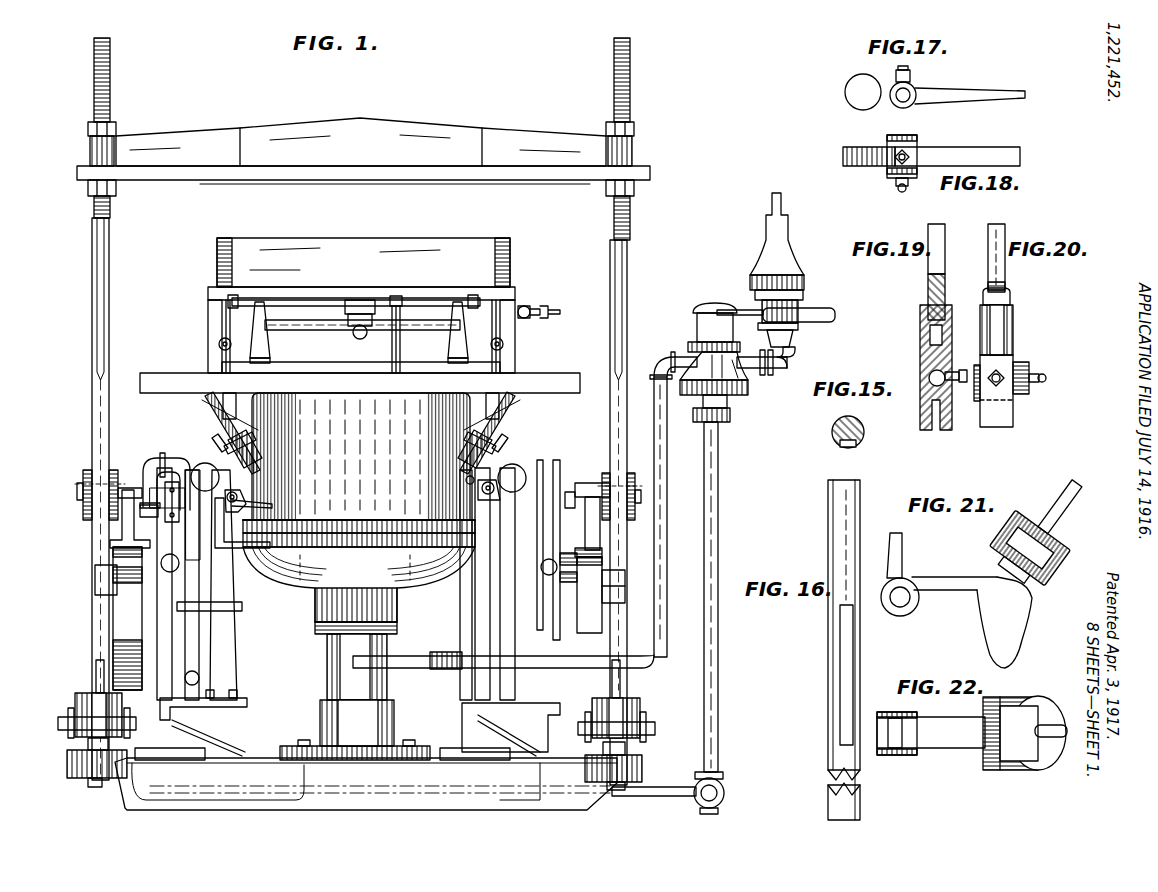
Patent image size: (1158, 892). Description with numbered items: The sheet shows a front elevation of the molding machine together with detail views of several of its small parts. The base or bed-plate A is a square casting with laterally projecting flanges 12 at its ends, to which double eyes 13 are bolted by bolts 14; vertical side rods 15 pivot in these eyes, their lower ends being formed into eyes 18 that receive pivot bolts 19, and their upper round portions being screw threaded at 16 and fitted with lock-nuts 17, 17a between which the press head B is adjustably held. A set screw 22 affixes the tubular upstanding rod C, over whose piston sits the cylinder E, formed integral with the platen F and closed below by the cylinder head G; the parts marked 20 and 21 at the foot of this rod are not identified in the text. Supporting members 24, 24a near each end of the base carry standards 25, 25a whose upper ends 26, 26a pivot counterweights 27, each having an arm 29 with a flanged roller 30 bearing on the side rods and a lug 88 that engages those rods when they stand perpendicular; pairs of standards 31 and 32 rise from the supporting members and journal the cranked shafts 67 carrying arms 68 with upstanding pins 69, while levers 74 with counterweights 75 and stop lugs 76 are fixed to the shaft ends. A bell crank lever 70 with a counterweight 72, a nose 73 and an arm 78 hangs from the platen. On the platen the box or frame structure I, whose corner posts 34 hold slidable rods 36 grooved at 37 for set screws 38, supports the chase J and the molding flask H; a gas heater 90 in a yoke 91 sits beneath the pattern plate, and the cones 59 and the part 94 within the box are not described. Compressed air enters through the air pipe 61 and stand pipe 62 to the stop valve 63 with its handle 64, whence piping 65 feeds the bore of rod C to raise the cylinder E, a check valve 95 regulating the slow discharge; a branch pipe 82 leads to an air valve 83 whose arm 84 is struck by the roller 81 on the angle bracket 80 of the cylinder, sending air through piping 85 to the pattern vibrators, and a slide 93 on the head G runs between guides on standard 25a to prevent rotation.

In FIG. 1, the laterally projecting flanges 12 is at (65, 766).
In FIG. 1, the double eyes 13 is at (72, 700).
In FIG. 1, the bolts 14 is at (86, 786).
In FIG. 1, the vertically extending rods 15 is at (91, 414).
In FIG. 1, the screw threaded portion 16 is at (92, 96).
In FIG. 1, the lock-nut 17 is at (86, 128).
In FIG. 1, the lock-nut 17a is at (86, 190).
In FIG. 1, the eyes 18 is at (96, 690).
In FIG. 1, the pivot bolts 19 is at (56, 722).
In FIG. 1, the base hub 20 is at (316, 715).
In FIG. 1, the base plate 21 is at (294, 748).
In FIG. 1, the set screw 22 is at (364, 728).
In FIG. 1, the supporting member 24 is at (200, 720).
In FIG. 1, the supporting member 24a is at (520, 726).
In FIG. 1, the standard 25 is at (155, 620).
In FIG. 1, the standard 25a is at (517, 580).
In FIG. 1, the upper end of standard 26 is at (120, 536).
In FIG. 1, the upper end of standard 26a is at (572, 546).
In FIG. 1, the counterweights 27 is at (357, 618).
In FIG. 1, the upwardly extending arm 29 is at (602, 524).
In FIG. 1, the flanged rollers 30 is at (82, 468).
In FIG. 1, the standards 31 is at (238, 636).
In FIG. 1, the standards 32 is at (470, 636).
In FIG. 1, the post 34 is at (207, 324).
In FIG. 1, the slidable rods 36 is at (220, 405).
In FIG. 15, the slidable rods 36 is at (832, 436).
In FIG. 16, the slidable rods 36 is at (828, 540).
In FIG. 15, the grooves 37 is at (843, 448).
In FIG. 16, the grooves 37 is at (846, 640).
In FIG. 1, the set screws 38 is at (218, 345).
In FIG. 1, the cone 59 is at (359, 332).
In FIG. 1, the air pipe 61 is at (726, 808).
In FIG. 1, the stand pipe 62 is at (722, 636).
In FIG. 1, the stop valve 63 is at (750, 388).
In FIG. 1, the operating handle 64 is at (838, 315).
In FIG. 1, the piping 65 is at (668, 546).
In FIG. 1, the cranked shafts 67 is at (212, 440).
In FIG. 20, the cranked shafts 67 is at (1040, 392).
In FIG. 1, the arms 68 is at (262, 455).
In FIG. 19, the arms 68 is at (918, 355).
In FIG. 20, the arms 68 is at (1006, 357).
In FIG. 1, the upstanding pin 69 is at (222, 425).
In FIG. 19, the upstanding pin 69 is at (946, 272).
In FIG. 20, the upstanding pin 69 is at (986, 272).
In FIG. 21, the bell crank lever 70 is at (942, 584).
In FIG. 22, the bell crank lever 70 is at (958, 748).
In FIG. 21, the counterweight 72 is at (1046, 590).
In FIG. 22, the counterweight 72 is at (1022, 776).
In FIG. 21, the nose 73 is at (996, 638).
In FIG. 17, the lever 74 is at (957, 87).
In FIG. 18, the lever 74 is at (953, 153).
In FIG. 1, the counterweight 75 is at (204, 466).
In FIG. 17, the counterweight 75 is at (858, 90).
In FIG. 18, the counterweight 75 is at (845, 156).
In FIG. 18, the downwardly projecting lugs 76 is at (890, 182).
In FIG. 19, the downwardly projecting lugs 76 is at (952, 432).
In FIG. 20, the downwardly projecting lugs 76 is at (1004, 428).
In FIG. 21, the arms 78 is at (904, 540).
In FIG. 22, the arms 78 is at (908, 732).
In FIG. 1, the angle bracket 80 is at (280, 562).
In FIG. 1, the roller 81 is at (362, 493).
In FIG. 1, the branch pipe 82 is at (183, 640).
In FIG. 1, the air valve 83 is at (160, 515).
In FIG. 1, the arm 84 is at (226, 520).
In FIG. 1, the piping 85 is at (388, 365).
In FIG. 1, the projecting lugs 88 is at (94, 580).
In FIG. 1, the gas heater 90 is at (322, 332).
In FIG. 1, the yoke 91 is at (368, 320).
In FIG. 1, the slide 93 is at (382, 612).
In FIG. 1, the rod 94 is at (540, 466).
In FIG. 1, the check valve 95 is at (790, 262).
In FIG. 1, the base A is at (366, 784).
In FIG. 1, the press head B is at (365, 128).
In FIG. 1, the upstanding rod C is at (328, 674).
In FIG. 1, the cylinder E is at (361, 456).
In FIG. 1, the platen F is at (165, 380).
In FIG. 1, the cylinder head G is at (359, 584).
In FIG. 1, the molding flask H is at (363, 262).
In FIG. 1, the frame structure I is at (400, 334).
In FIG. 1, the chase J is at (206, 296).